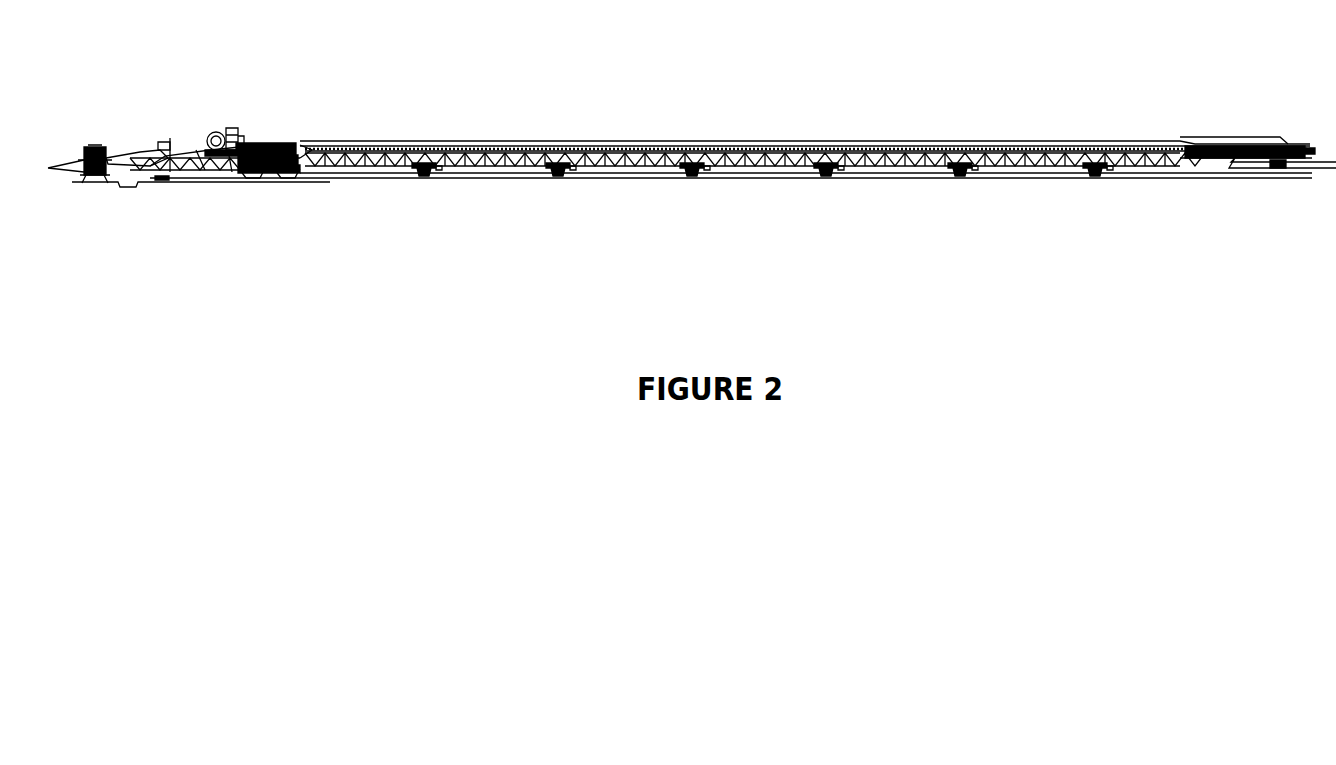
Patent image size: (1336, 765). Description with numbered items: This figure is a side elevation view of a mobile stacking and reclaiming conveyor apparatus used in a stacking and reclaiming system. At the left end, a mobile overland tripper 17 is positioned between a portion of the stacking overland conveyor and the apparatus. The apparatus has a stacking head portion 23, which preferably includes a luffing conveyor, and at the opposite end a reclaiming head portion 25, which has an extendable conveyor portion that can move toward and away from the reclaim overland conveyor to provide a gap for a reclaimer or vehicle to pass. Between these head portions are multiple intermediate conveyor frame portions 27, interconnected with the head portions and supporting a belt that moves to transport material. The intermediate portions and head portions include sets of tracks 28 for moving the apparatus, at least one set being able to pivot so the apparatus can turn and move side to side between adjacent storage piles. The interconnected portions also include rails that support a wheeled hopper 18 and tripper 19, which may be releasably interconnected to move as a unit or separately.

The mobile overland tripper 17 is at (94, 148).
The hopper 18 is at (288, 131).
The tripper 19 is at (238, 113).
The stacking head portion 23 is at (162, 117).
The reclaiming head portion 25 is at (1250, 117).
The intermediate conveyor frame portions 27 is at (655, 150).
The tracks 28 is at (558, 177).